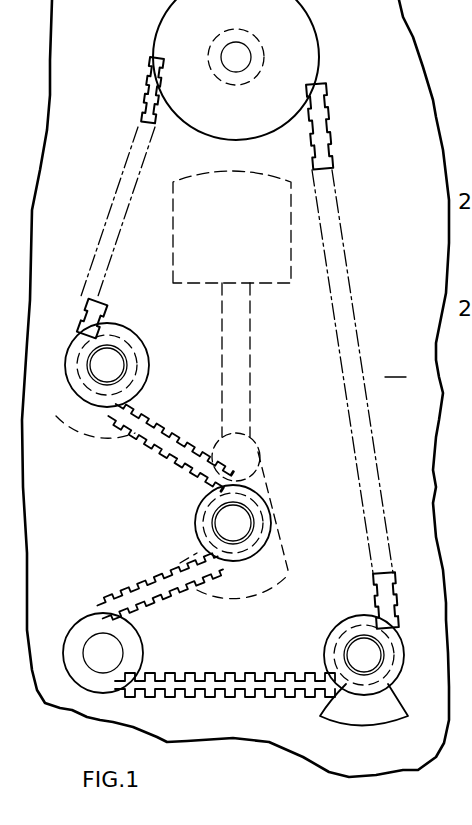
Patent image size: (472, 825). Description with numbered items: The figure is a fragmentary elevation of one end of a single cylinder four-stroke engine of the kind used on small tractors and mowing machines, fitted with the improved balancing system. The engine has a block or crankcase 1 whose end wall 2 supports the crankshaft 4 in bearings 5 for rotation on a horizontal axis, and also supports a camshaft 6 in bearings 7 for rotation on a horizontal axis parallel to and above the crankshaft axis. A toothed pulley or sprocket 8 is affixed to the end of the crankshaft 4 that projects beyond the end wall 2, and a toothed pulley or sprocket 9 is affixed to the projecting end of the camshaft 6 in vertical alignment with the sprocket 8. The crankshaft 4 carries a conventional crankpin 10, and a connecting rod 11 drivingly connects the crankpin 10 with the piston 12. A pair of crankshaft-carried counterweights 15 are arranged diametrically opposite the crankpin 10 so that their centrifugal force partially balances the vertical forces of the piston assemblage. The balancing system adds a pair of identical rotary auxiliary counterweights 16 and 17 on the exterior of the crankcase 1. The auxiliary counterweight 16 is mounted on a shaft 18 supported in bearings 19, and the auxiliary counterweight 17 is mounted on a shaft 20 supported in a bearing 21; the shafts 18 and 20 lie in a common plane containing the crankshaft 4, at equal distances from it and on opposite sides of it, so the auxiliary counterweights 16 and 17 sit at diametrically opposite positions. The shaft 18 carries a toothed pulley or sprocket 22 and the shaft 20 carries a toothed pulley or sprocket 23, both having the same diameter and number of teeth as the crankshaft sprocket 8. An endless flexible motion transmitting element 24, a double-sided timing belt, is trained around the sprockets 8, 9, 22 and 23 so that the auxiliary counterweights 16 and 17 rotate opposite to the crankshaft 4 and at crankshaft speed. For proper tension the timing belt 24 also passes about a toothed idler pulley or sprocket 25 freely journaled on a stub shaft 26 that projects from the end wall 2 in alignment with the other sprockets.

The crankcase 1 is at (417, 772).
The end wall 2 is at (395, 364).
The crankshaft 4 is at (266, 529).
The bearings 5 is at (261, 512).
The camshaft 6 is at (221, 52).
The bearings 7 is at (259, 68).
The toothed pulley or sprocket 8 is at (192, 528).
The toothed pulley or sprocket 9 is at (156, 38).
The crankpin 10 is at (258, 445).
The connecting rod 11 is at (249, 373).
The piston 12 is at (283, 287).
The counterweights 15 is at (256, 596).
The auxiliary counterweight 16 is at (97, 440).
The auxiliary counterweight 17 is at (359, 733).
The shaft 18 is at (126, 364).
The bearings 19 is at (121, 339).
The shaft 20 is at (397, 632).
The bearing 21 is at (343, 630).
The toothed pulley or sprocket 22 is at (70, 347).
The toothed pulley or sprocket 23 is at (324, 665).
The endless flexible motion transmitting element 24 is at (354, 297).
The toothed idler pulley or sprocket 25 is at (138, 647).
The stub shaft 26 is at (77, 628).